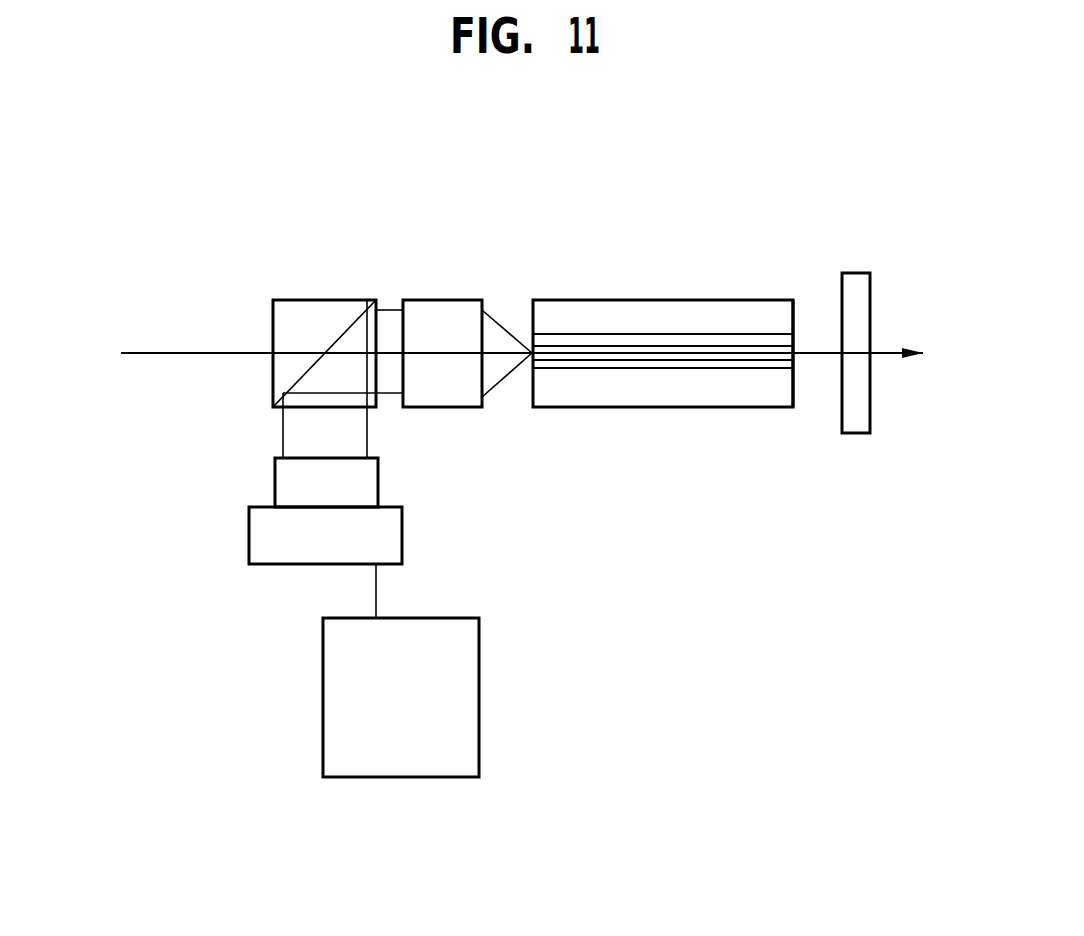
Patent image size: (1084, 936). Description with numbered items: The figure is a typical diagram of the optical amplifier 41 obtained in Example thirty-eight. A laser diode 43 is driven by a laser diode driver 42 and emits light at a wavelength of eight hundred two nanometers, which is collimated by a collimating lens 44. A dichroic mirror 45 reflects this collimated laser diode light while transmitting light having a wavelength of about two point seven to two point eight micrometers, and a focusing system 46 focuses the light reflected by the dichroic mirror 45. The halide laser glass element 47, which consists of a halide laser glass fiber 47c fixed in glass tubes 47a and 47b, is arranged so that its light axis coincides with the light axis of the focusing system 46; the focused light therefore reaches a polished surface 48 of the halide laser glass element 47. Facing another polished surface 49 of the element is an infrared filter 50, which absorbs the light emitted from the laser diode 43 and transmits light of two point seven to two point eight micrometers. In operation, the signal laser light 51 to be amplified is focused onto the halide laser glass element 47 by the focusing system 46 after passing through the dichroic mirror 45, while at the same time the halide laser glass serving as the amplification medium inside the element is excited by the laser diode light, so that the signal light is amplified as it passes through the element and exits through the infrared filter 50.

The optical amplifier 41 is at (590, 240).
The laser diode driver 42 is at (479, 660).
The laser diode 43 is at (402, 528).
The collimating lens 44 is at (378, 473).
The dichroic mirror 45 is at (315, 300).
The focusing system 46 is at (442, 300).
The halide laser glass element 47 is at (682, 296).
The glass tube 47a is at (672, 370).
The glass tube 47b is at (590, 396).
The halide laser glass fiber 47c is at (743, 358).
The polished surface 48 is at (532, 356).
The polished surface 49 is at (795, 355).
The infrared filter 50 is at (857, 273).
The signal laser light 51 is at (198, 352).